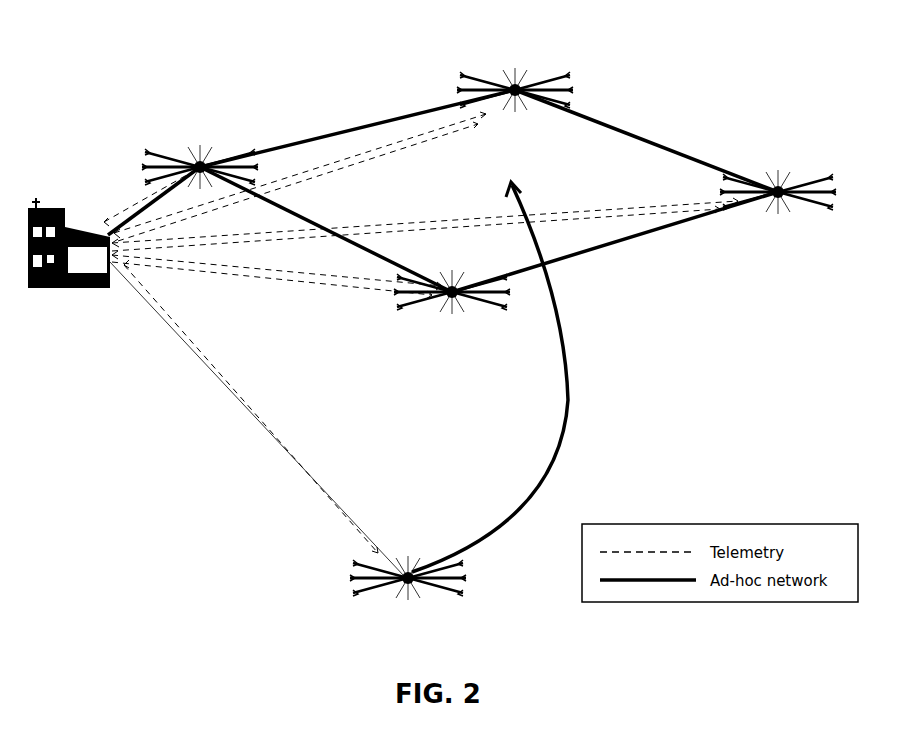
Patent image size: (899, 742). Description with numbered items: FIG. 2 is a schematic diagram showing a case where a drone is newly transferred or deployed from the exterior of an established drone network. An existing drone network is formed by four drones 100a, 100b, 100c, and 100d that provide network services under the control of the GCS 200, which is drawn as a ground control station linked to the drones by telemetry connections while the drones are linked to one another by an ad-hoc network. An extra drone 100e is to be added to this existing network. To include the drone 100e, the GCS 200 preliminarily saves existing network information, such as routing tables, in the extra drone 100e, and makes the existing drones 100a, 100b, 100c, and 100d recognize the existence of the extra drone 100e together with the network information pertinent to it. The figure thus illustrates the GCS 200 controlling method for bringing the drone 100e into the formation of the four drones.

The drone 100a is at (196, 164).
The drone 100b is at (515, 86).
The drone 100c is at (456, 289).
The drone 100d is at (780, 189).
The extra drone 100e is at (409, 575).
The GCS 200 is at (103, 295).